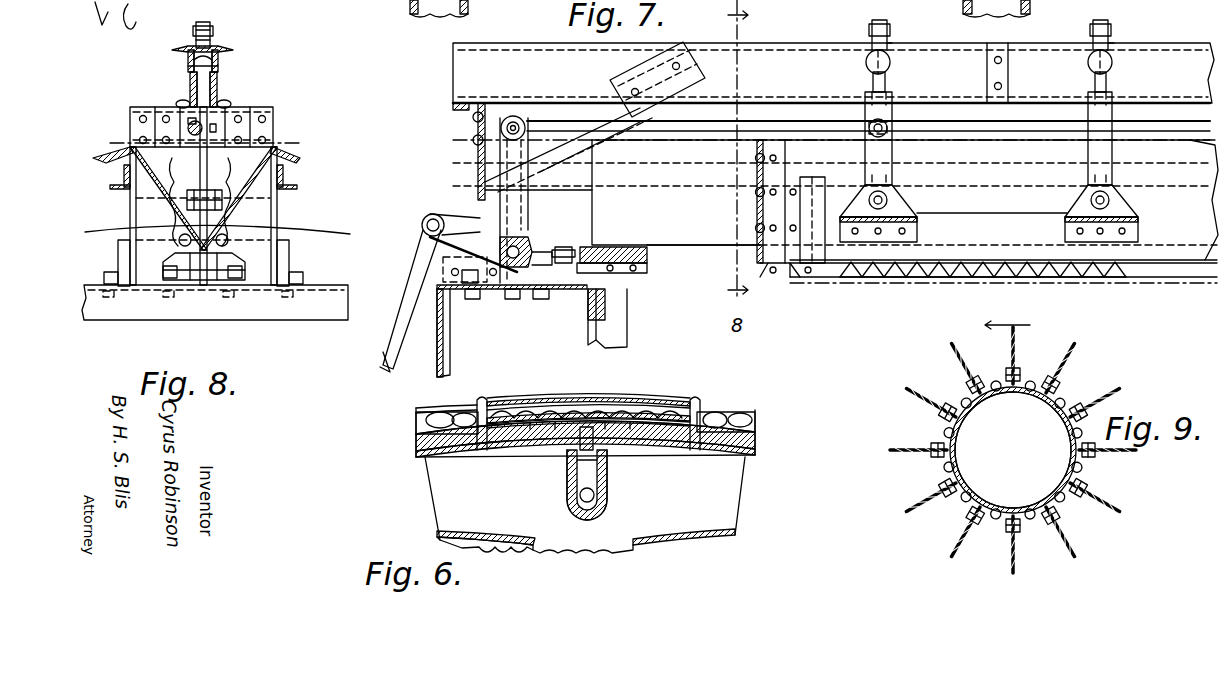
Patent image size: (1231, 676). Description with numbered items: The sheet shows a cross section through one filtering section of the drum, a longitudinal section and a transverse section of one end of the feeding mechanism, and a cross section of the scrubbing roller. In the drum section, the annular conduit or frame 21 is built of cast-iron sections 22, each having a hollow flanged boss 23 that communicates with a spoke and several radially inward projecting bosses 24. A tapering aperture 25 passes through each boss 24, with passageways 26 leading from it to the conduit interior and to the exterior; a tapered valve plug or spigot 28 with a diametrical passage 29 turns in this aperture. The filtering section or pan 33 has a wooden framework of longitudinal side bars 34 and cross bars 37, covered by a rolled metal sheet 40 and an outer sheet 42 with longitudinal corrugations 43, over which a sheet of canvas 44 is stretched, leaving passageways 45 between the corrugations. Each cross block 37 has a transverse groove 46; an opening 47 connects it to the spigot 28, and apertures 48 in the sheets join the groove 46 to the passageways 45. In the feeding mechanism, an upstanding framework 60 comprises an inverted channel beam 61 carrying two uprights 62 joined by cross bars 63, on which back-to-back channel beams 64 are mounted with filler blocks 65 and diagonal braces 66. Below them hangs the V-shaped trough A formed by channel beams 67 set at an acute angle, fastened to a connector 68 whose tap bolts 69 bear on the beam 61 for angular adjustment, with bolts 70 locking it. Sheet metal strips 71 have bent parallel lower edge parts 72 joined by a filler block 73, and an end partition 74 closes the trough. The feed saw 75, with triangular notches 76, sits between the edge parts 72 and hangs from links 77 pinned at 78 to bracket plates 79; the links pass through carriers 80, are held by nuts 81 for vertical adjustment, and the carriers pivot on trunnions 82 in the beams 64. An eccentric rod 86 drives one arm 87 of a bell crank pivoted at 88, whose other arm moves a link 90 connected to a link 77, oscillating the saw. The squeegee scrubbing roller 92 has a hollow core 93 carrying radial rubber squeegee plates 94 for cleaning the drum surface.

In FIG. 6, the annular tubular ring or combined conduit and frame 21 is at (586, 550).
In FIG. 6, the conduit or frame section 22 is at (748, 503).
In FIG. 7, the hollow flanged boss 23 is at (1030, 8).
In FIG. 6, the hollow flanged boss 23 is at (528, 545).
In FIG. 6, the radially inward projecting boss 24 is at (607, 497).
In FIG. 6, the tapering aperture 25 is at (577, 508).
In FIG. 6, the passageway 26 is at (597, 475).
In FIG. 6, the valve plug or spigot 28 is at (600, 510).
In FIG. 6, the diametrical passage 29 is at (585, 503).
In FIG. 6, the filtering section or pan 33 is at (725, 386).
In FIG. 6, the longitudinal side bar 34 is at (470, 460).
In FIG. 6, the cross bar 37 is at (438, 456).
In FIG. 6, the rolled metal sheet 40 is at (635, 402).
In FIG. 6, the second sheet of metal 42 is at (620, 400).
In FIG. 6, the longitudinal corrugation 43 is at (560, 402).
In FIG. 6, the sheet of canvas 44 is at (470, 408).
In FIG. 6, the longitudinal passageway 45 is at (535, 406).
In FIG. 6, the groove 46 is at (416, 430).
In FIG. 6, the opening 47 is at (593, 440).
In FIG. 6, the aperture 48 is at (510, 404).
In FIG. 7, the upstanding framework 60 is at (440, 340).
In FIG. 8, the inverted channel beam 61 is at (318, 316).
In FIG. 7, the inverted channel beam 61 is at (570, 288).
In FIG. 8, the upright 62 is at (130, 215).
In FIG. 7, the upright 62 is at (478, 145).
In FIG. 8, the cross bar 63 is at (222, 118).
In FIG. 7, the cross bar 63 is at (475, 128).
In FIG. 8, the channel beam 64 is at (190, 90).
In FIG. 7, the channel beam 64 is at (785, 42).
In FIG. 7, the filler block 65 is at (655, 70).
In FIG. 7, the diagonal brace 66 is at (605, 104).
In FIG. 8, the channel beam 67 is at (105, 158).
In FIG. 7, the channel beam 67 is at (1190, 145).
In FIG. 8, the support or connector 68 is at (172, 268).
In FIG. 7, the support or connector 68 is at (647, 268).
In FIG. 7, the adjustable through tap bolt 69 is at (568, 248).
In FIG. 7, the bolt 70 is at (545, 300).
In FIG. 8, the sheet metal strip 71 is at (210, 232).
In FIG. 7, the sheet metal strip 71 is at (1203, 200).
In FIG. 8, the lower parallel edge part 72 is at (172, 282).
In FIG. 7, the lower parallel edge part 72 is at (838, 270).
In FIG. 8, the filler block 73 is at (203, 282).
In FIG. 7, the filler block 73 is at (800, 270).
In FIG. 8, the end partition 74 is at (265, 198).
In FIG. 7, the end partition 74 is at (757, 205).
In FIG. 8, the feed saw 75 is at (285, 236).
In FIG. 7, the feed saw 75 is at (1000, 230).
In FIG. 7, the triangular notch 76 is at (1040, 273).
In FIG. 8, the link 77 is at (207, 163).
In FIG. 7, the link 77 is at (892, 148).
In FIG. 8, the pin 78 is at (185, 200).
In FIG. 7, the pin 78 is at (893, 200).
In FIG. 8, the bracket plate 79 is at (150, 232).
In FIG. 7, the bracket plate 79 is at (918, 230).
In FIG. 8, the carrier 80 is at (212, 50).
In FIG. 7, the carrier 80 is at (890, 42).
In FIG. 8, the nut 81 is at (196, 30).
In FIG. 7, the nut 81 is at (872, 30).
In FIG. 8, the trunnion 82 is at (218, 64).
In FIG. 7, the trunnion 82 is at (890, 62).
In FIG. 7, the eccentric rod 86 is at (425, 288).
In FIG. 7, the arm of bell crank 87 is at (458, 225).
In FIG. 7, the pivot 88 is at (515, 248).
In FIG. 8, the link 90 is at (190, 122).
In FIG. 7, the link 90 is at (712, 140).
In FIG. 9, the squeegee scrubbing roller 92 is at (1013, 450).
In FIG. 9, the inner hollow core 93 is at (1066, 420).
In FIG. 9, the radial squeegee plate 94 is at (1070, 355).
In FIG. 8, the horizontal trough A is at (199, 199).
In FIG. 7, the horizontal trough A is at (975, 163).